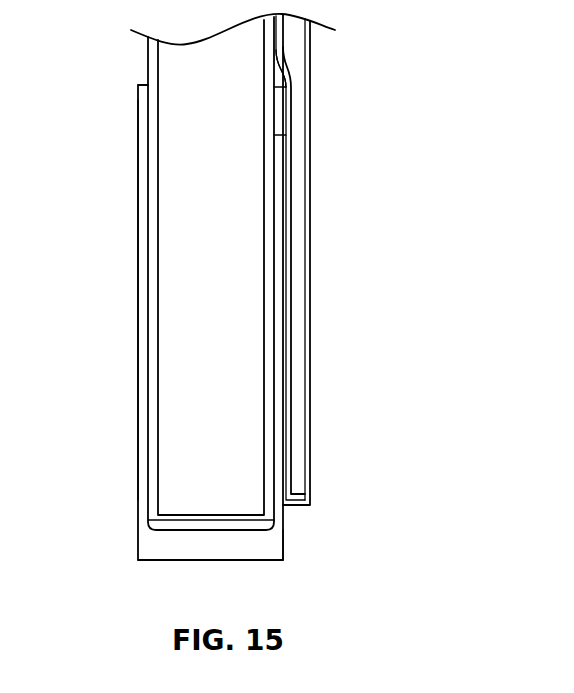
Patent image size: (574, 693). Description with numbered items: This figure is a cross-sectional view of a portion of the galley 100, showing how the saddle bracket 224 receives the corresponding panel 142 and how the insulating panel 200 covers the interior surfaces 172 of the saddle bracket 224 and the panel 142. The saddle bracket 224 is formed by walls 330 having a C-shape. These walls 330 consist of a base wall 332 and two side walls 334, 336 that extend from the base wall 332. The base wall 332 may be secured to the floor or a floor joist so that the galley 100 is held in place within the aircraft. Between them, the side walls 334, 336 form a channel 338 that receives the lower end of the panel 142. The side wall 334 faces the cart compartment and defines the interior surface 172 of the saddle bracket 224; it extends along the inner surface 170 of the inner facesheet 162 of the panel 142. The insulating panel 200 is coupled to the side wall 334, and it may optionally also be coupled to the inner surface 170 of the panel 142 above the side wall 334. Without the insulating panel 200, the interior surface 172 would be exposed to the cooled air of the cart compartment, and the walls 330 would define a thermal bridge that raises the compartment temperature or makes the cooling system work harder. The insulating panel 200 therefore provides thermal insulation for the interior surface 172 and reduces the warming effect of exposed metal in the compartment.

The galley 100 is at (403, 45).
The panel 142 is at (183, 300).
The inner facesheet 162 is at (267, 337).
The inner surface 170 is at (275, 392).
The interior surface 172 is at (287, 288).
The insulating panel 200 is at (297, 187).
The saddle bracket 224 is at (267, 542).
The walls 330 is at (143, 417).
The base wall 332 is at (210, 550).
The side wall 334 is at (285, 163).
The side wall 336 is at (137, 225).
The channel 338 is at (146, 80).